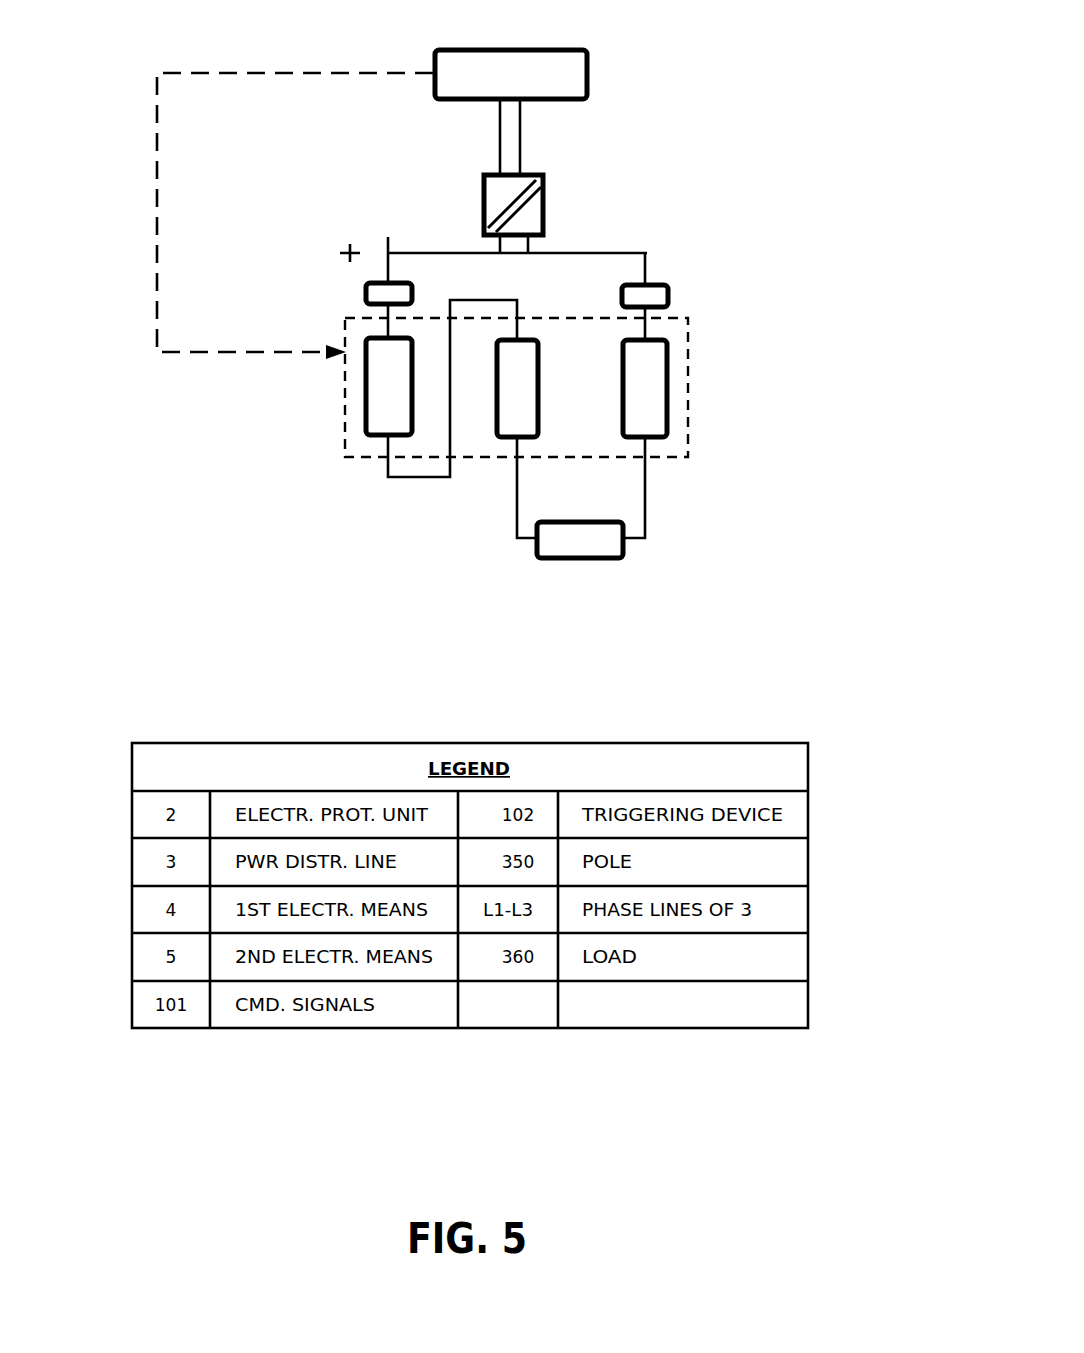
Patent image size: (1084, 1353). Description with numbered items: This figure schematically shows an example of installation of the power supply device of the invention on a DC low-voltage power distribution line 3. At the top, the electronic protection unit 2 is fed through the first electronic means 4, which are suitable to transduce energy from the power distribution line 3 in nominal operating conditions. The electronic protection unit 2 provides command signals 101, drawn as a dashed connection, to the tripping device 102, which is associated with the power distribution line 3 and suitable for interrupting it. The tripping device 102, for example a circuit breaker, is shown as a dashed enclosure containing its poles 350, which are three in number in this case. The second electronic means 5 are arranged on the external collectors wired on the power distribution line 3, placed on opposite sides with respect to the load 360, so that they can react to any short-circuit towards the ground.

The electronic protection unit 2 is at (583, 77).
The power distribution line 3 is at (388, 212).
The first electronic means 4 is at (538, 196).
The second electronic means 5 is at (365, 293).
The command signals 101 is at (250, 216).
The tripping device 102 is at (688, 450).
The poles 350 is at (378, 367).
The load 360 is at (623, 557).